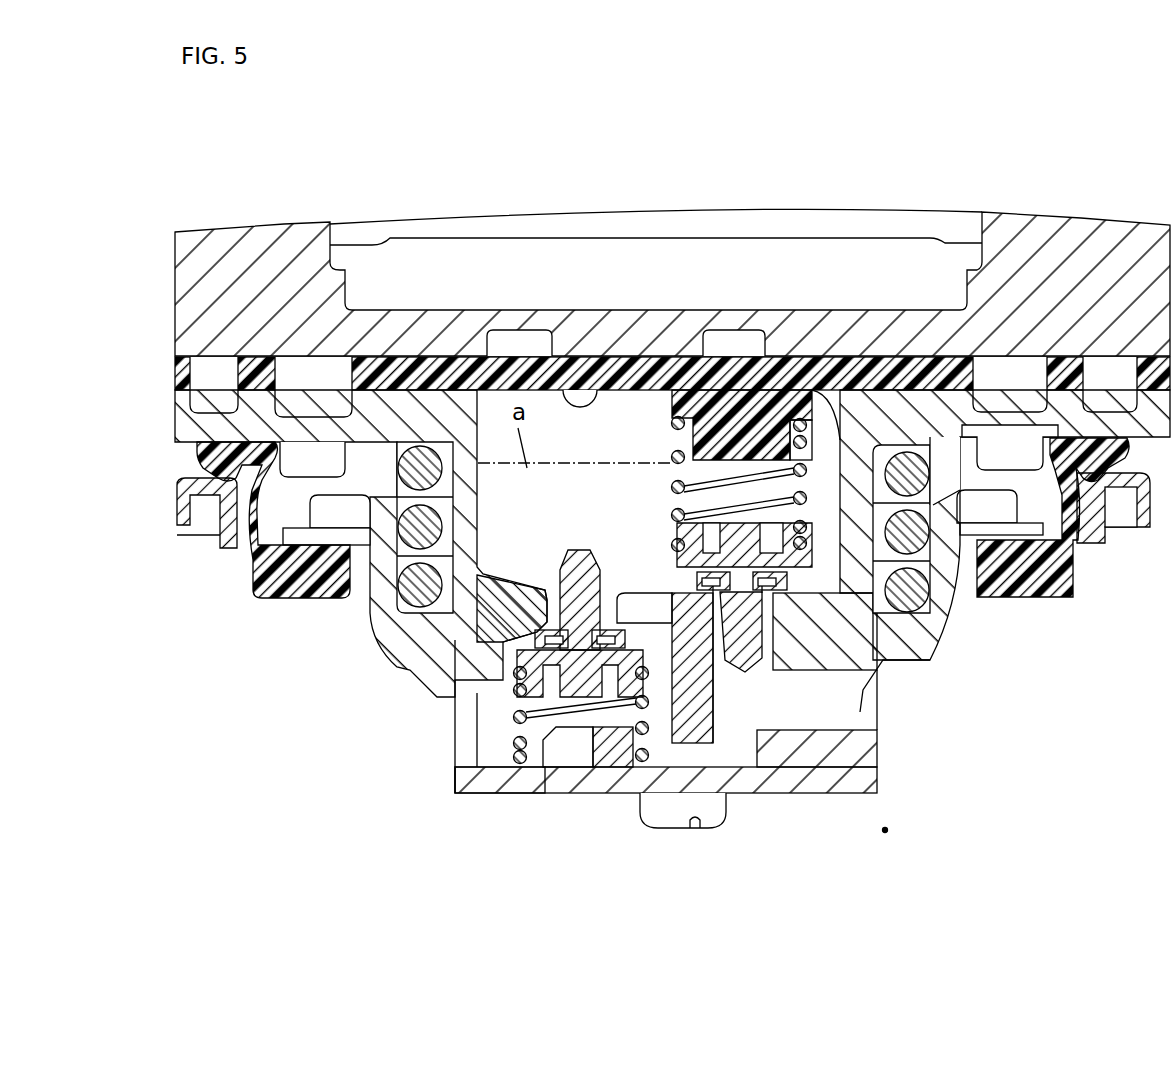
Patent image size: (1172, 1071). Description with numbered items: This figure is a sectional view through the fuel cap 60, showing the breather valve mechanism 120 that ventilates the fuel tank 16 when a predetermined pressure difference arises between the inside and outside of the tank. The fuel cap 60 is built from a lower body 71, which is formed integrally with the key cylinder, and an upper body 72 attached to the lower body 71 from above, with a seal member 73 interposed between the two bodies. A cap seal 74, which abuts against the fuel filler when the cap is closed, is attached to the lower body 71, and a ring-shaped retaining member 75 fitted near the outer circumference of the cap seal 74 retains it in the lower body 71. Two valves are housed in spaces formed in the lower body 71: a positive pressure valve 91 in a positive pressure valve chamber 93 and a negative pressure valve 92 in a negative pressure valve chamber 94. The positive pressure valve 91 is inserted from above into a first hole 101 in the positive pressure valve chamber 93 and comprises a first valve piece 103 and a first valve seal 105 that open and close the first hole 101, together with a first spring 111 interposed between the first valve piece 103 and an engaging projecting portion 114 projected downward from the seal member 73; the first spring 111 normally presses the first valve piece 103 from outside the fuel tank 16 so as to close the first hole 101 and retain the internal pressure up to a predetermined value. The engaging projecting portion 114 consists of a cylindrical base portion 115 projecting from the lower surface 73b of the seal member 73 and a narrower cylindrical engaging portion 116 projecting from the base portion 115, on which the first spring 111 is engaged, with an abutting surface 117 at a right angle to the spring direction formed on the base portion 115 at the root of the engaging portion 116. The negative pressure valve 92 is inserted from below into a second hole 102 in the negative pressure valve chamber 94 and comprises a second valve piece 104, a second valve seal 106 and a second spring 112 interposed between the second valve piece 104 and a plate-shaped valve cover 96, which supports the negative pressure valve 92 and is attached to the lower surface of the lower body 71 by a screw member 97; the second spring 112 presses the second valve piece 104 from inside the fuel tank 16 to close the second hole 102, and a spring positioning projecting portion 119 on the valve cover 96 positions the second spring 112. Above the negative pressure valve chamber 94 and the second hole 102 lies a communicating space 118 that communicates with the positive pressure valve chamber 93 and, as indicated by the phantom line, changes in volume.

The fuel tank 16 is at (887, 833).
The fuel cap 60 is at (1030, 190).
The lower body 71 is at (887, 625).
The upper body 72 is at (1075, 237).
The seal member 73 is at (407, 357).
The lower surface 73b is at (597, 385).
The cap seal 74 is at (1030, 612).
The retaining member 75 is at (1097, 533).
The positive pressure valve 91 is at (875, 665).
The negative pressure valve 92 is at (497, 800).
The positive pressure valve chamber 93 is at (805, 400).
The negative pressure valve chamber 94 is at (480, 715).
The valve cover 96 is at (518, 790).
The screw member 97 is at (678, 816).
The first hole 101 is at (865, 705).
The second hole 102 is at (470, 622).
The first valve piece 103 is at (830, 787).
The second valve piece 104 is at (578, 556).
The first valve seal 105 is at (738, 660).
The second valve seal 106 is at (615, 645).
The first spring 111 is at (845, 415).
The second spring 112 is at (505, 748).
The engaging projecting portion 114 is at (713, 343).
The base portion 115 is at (703, 420).
The engaging portion 116 is at (655, 415).
The abutting surface 117 is at (683, 470).
The communicating space 118 is at (497, 352).
The spring positioning projecting portion 119 is at (588, 772).
The breather valve mechanism 120 is at (442, 827).